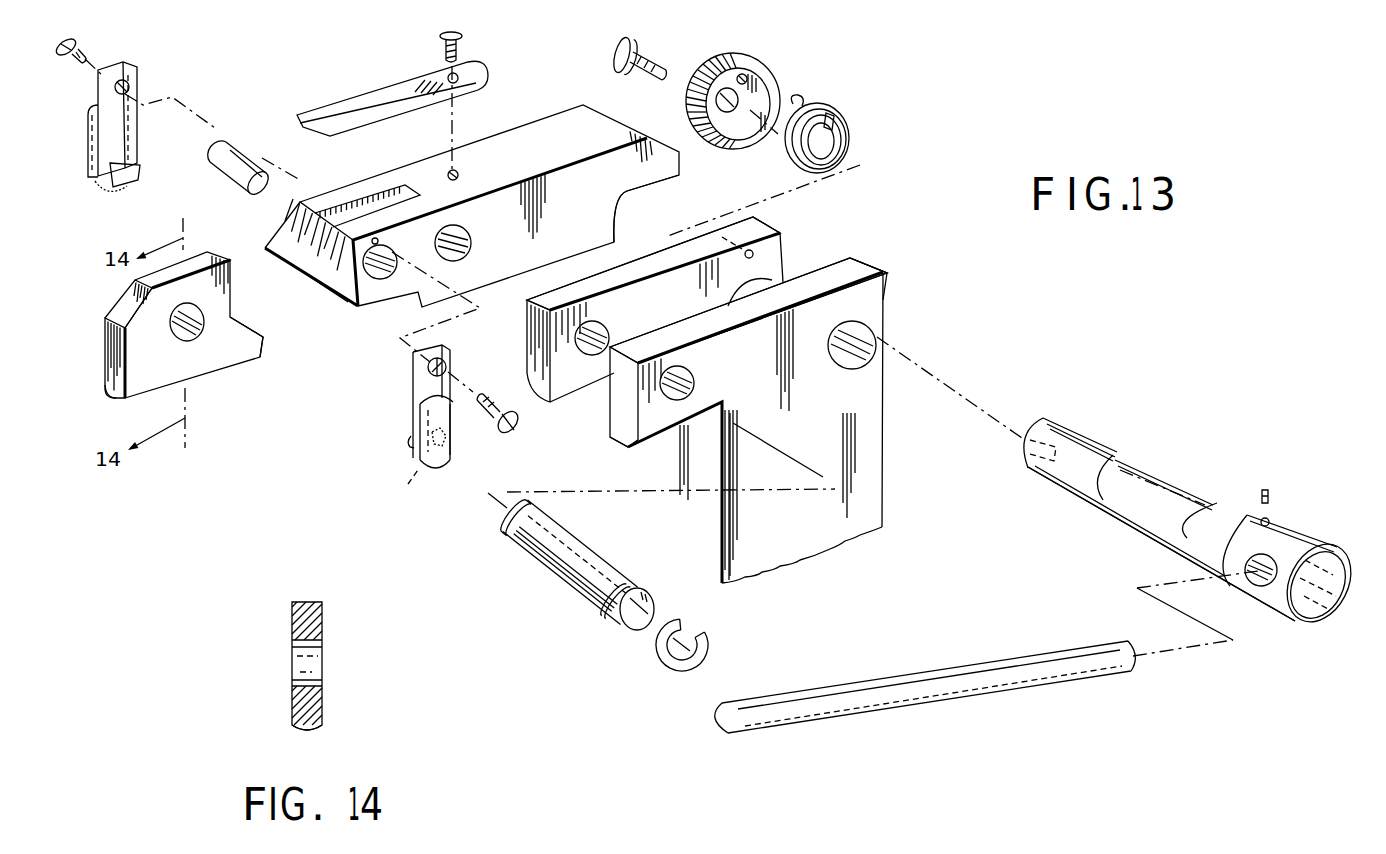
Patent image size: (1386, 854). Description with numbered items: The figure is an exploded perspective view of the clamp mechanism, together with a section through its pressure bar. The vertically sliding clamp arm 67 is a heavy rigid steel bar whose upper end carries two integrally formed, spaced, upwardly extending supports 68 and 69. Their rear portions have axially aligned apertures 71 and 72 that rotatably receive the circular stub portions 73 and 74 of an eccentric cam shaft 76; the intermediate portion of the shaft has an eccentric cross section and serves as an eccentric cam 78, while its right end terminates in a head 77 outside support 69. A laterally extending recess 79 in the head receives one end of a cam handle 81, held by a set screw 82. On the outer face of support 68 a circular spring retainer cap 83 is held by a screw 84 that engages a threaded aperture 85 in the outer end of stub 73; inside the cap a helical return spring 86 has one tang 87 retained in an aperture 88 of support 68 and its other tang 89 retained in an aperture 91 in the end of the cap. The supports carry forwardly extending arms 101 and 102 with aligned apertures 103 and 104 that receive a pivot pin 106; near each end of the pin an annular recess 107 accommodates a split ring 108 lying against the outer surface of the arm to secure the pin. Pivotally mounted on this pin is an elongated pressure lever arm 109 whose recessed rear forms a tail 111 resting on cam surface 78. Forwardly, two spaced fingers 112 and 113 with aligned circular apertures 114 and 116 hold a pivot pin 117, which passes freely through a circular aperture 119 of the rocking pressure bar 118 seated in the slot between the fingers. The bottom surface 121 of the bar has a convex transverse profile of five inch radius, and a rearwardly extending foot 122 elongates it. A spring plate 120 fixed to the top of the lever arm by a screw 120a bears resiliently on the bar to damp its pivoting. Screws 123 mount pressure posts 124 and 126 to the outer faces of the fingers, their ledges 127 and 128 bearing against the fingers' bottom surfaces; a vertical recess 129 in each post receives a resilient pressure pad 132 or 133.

In FIG. 13, the sliding clamp arm 67 is at (838, 523).
In FIG. 13, the support 68 is at (783, 254).
In FIG. 13, the support 69 is at (890, 275).
In FIG. 13, the aperture 71 is at (847, 262).
In FIG. 13, the aperture 72 is at (873, 341).
In FIG. 13, the circular stub portion 73 is at (1085, 434).
In FIG. 13, the circular stub portion 74 is at (1191, 536).
In FIG. 13, the eccentric cam shaft 76 is at (1115, 522).
In FIG. 13, the head 77 is at (1305, 528).
In FIG. 13, the eccentric cam 78 is at (1156, 477).
In FIG. 13, the recess 79 is at (1259, 582).
In FIG. 13, the cam handle 81 is at (1058, 680).
In FIG. 13, the set screw 82 is at (1268, 490).
In FIG. 13, the spring retainer cap 83 is at (690, 110).
In FIG. 13, the screw 84 is at (615, 63).
In FIG. 13, the threaded aperture 85 is at (1023, 447).
In FIG. 13, the helical return spring 86 is at (845, 147).
In FIG. 13, the tang 87 is at (836, 112).
In FIG. 13, the aperture 88 is at (755, 250).
In FIG. 13, the tang 89 is at (802, 102).
In FIG. 13, the aperture 91 is at (749, 78).
In FIG. 13, the arm 101 is at (528, 351).
In FIG. 13, the arm 102 is at (614, 441).
In FIG. 13, the aperture 103 is at (607, 325).
In FIG. 13, the aperture 104 is at (693, 375).
In FIG. 13, the pivot pin 106 is at (553, 569).
In FIG. 13, the annular recess 107 is at (505, 534).
In FIG. 13, the split ring 108 is at (672, 671).
In FIG. 13, the pressure lever arm 109 is at (504, 150).
In FIG. 13, the tail 111 is at (667, 168).
In FIG. 13, the finger 112 is at (290, 220).
In FIG. 13, the finger 113 is at (316, 280).
In FIG. 13, the circular aperture 114 is at (333, 226).
In FIG. 13, the circular aperture 116 is at (383, 277).
In FIG. 13, the pivot pin 117 is at (228, 175).
In FIG. 13, the pressure bar 118 is at (217, 362).
In FIG. 14, the pressure bar 118 is at (325, 623).
In FIG. 13, the circular aperture 119 is at (200, 322).
In FIG. 14, the circular aperture 119 is at (317, 668).
In FIG. 13, the spring plate 120 is at (345, 106).
In FIG. 13, the screw 120a is at (440, 52).
In FIG. 13, the bottom surface 121 is at (108, 400).
In FIG. 14, the bottom surface 121 is at (310, 728).
In FIG. 13, the foot 122 is at (266, 347).
In FIG. 13, the screw 123 is at (77, 61).
In FIG. 13, the pressure post 124 is at (92, 135).
In FIG. 13, the pressure post 126 is at (416, 409).
In FIG. 13, the ledge 127 is at (104, 183).
In FIG. 13, the ledge 128 is at (411, 443).
In FIG. 13, the recess 129 is at (408, 484).
In FIG. 13, the pressure pad 132 is at (116, 192).
In FIG. 13, the pressure pad 133 is at (447, 470).